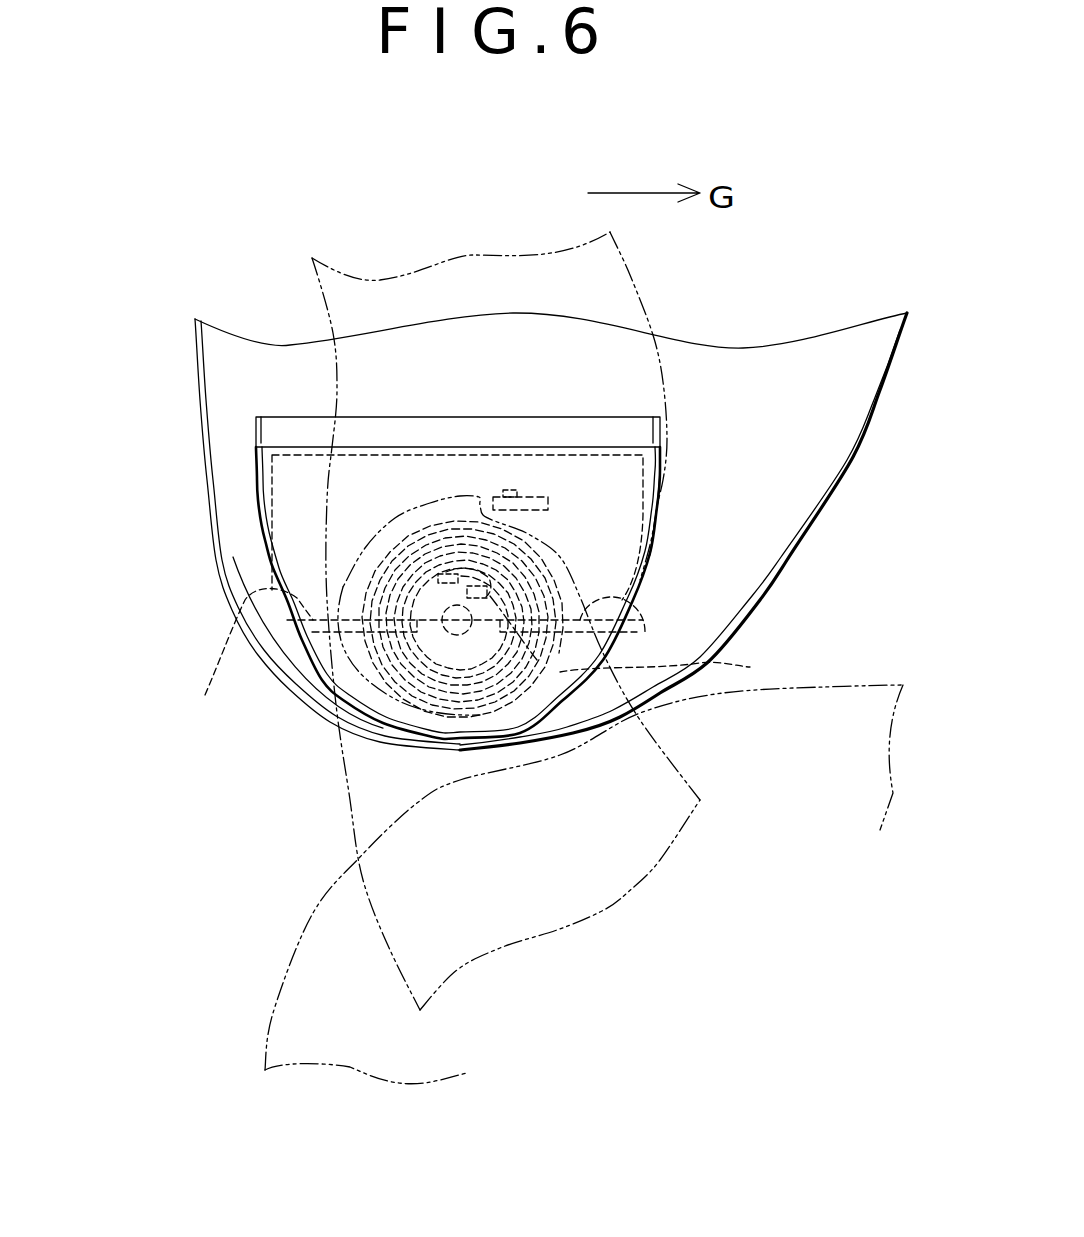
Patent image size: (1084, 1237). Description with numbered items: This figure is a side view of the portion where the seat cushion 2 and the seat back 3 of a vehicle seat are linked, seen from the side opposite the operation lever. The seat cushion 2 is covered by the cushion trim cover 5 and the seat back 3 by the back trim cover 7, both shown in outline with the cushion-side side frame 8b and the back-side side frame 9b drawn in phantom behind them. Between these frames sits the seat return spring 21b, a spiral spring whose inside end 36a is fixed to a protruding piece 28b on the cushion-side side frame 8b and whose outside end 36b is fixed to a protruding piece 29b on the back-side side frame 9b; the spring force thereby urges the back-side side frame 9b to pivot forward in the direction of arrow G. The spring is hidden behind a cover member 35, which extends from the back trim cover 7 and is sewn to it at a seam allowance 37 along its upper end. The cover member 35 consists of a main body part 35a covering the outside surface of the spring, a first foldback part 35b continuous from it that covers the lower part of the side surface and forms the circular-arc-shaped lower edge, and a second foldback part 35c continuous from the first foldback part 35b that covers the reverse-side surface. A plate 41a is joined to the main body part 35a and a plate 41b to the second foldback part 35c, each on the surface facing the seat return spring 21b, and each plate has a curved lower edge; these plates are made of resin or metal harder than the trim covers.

The seat cushion 2 is at (804, 861).
The seat back 3 is at (894, 278).
The cushion trim cover 5 is at (350, 1050).
The back trim cover 7 is at (830, 447).
The cushion-side side frame 8b is at (542, 902).
The back-side side frame 9b is at (647, 307).
The seat return spring 21b is at (550, 567).
The protruding piece 28b is at (447, 567).
The protruding piece 29b is at (520, 500).
The cover member 35 is at (360, 658).
The main body part 35a is at (257, 520).
The first foldback part 35b is at (393, 727).
The second foldback part 35c is at (215, 659).
The inside end 36a is at (682, 669).
The outside end 36b is at (503, 493).
The seam allowance 37 is at (368, 421).
The plate 41a is at (660, 507).
The plate 41b is at (643, 600).